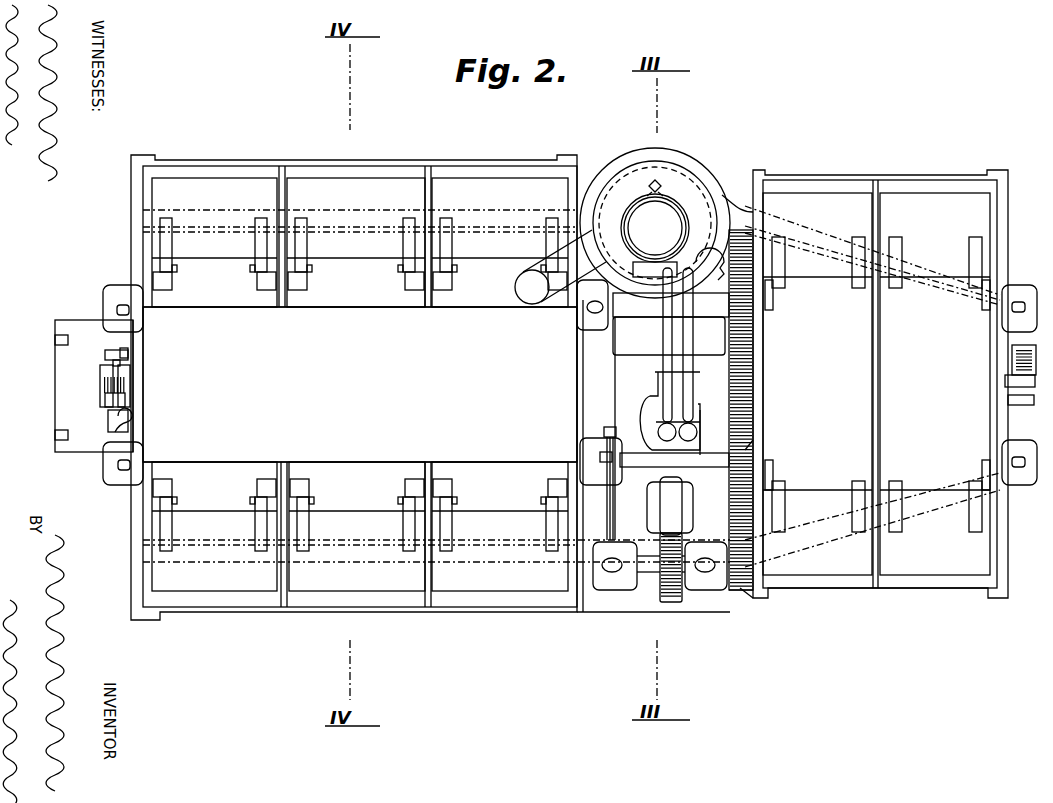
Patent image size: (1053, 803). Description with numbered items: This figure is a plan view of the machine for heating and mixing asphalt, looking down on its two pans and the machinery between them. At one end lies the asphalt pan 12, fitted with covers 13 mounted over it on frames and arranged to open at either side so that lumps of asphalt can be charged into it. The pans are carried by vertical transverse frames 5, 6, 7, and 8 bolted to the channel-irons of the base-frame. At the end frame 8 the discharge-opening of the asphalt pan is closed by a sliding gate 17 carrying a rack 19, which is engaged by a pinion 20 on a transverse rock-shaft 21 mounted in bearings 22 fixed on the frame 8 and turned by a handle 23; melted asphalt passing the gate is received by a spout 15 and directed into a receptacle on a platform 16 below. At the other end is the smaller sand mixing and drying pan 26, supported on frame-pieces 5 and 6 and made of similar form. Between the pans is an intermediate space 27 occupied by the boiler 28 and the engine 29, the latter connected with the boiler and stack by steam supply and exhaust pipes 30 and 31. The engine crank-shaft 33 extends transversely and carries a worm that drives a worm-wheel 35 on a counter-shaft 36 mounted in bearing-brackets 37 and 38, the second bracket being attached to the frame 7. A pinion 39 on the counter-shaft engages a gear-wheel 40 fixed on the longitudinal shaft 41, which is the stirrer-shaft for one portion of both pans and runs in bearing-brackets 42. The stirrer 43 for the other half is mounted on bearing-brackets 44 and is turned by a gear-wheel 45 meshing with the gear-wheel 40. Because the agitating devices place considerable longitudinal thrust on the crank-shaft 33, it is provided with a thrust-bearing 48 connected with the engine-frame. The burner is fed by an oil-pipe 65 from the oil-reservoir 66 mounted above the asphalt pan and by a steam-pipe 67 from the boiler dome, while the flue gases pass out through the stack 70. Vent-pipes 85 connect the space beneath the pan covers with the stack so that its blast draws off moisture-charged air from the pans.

The vertical transverse frame 5 is at (880, 396).
The vertical transverse frame 6 is at (750, 605).
The vertical transverse frame 7 is at (430, 396).
The vertical transverse frame 8 is at (138, 351).
The asphalt pan 12 is at (357, 526).
The cover 13 is at (360, 384).
The spout 15 is at (100, 378).
The platform 16 is at (55, 353).
The gate 17 is at (131, 374).
The rack 19 is at (128, 388).
The pinion 20 is at (106, 396).
The rock-shaft 21 is at (108, 367).
The bearing 22 is at (124, 349).
The handle 23 is at (112, 432).
The sand mixing and drying pan 26 is at (890, 384).
The intermediate space 27 is at (659, 411).
The boiler 28 is at (690, 186).
The engine 29 is at (699, 424).
The steam supply pipe 30 is at (694, 333).
The exhaust pipe 31 is at (669, 345).
The crank-shaft 33 is at (722, 590).
The worm-wheel 35 is at (668, 595).
The counter-shaft 36 is at (645, 568).
The bearing-bracket 37 is at (605, 590).
The bearing-bracket 38 is at (706, 566).
The pinion 39 is at (736, 592).
The gear-wheel 40 is at (753, 450).
The longitudinal shaft 41 is at (674, 461).
The bearing-bracket 42 is at (571, 463).
The stirrer 43 is at (671, 416).
The bearing-bracket 44 is at (570, 296).
The gear-wheel 45 is at (754, 340).
The thrust-bearing 48 is at (670, 506).
The oil-pipe 65 is at (608, 498).
The oil-reservoir 66 is at (360, 384).
The steam-pipe 67 is at (612, 494).
The stack 70 is at (655, 228).
The vent-pipe 85 is at (516, 287).